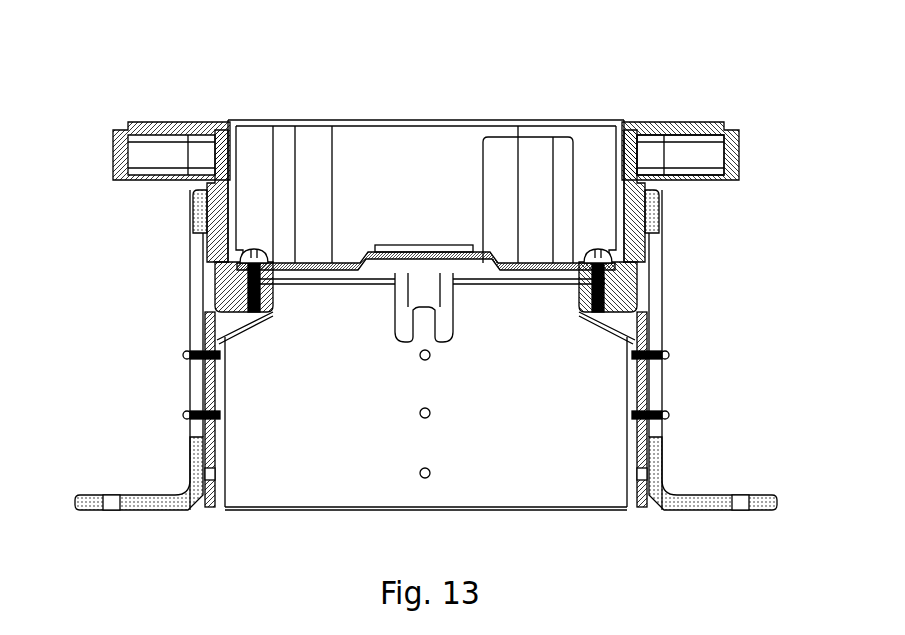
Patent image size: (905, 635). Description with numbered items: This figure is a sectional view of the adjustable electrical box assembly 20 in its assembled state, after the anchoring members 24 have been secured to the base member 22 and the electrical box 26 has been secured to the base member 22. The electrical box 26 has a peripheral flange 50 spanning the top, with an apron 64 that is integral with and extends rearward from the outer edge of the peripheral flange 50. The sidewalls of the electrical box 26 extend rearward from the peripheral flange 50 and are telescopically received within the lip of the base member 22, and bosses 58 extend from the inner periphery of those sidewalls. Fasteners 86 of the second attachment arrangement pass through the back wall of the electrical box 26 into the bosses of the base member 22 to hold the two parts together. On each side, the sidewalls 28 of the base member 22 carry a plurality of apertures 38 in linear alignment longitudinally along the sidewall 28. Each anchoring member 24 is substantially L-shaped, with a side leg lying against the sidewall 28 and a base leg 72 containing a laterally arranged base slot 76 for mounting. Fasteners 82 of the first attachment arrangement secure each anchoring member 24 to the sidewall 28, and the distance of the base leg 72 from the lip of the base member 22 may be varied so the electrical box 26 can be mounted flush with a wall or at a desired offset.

The adjustable electrical box assembly 20 is at (113, 85).
The base member 22 is at (426, 391).
The anchoring member 24 is at (188, 305).
The electrical box 26 is at (426, 202).
The sidewalls 28 is at (211, 386).
The apertures 38 is at (419, 473).
The peripheral flange 50 is at (668, 120).
The bosses 58 is at (314, 189).
The apron 64 is at (736, 152).
The base leg 72 is at (716, 506).
The base slot 76 is at (742, 510).
The fasteners 82 is at (185, 414).
The fasteners 86 is at (266, 288).